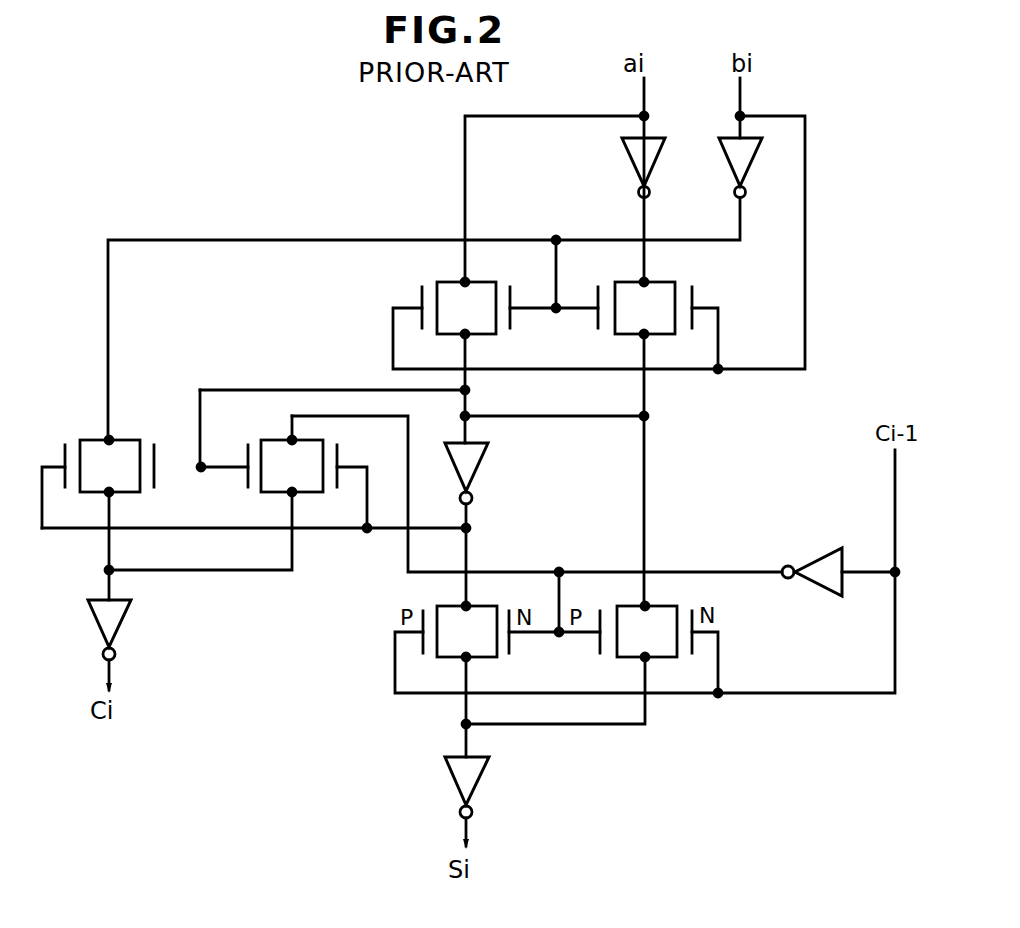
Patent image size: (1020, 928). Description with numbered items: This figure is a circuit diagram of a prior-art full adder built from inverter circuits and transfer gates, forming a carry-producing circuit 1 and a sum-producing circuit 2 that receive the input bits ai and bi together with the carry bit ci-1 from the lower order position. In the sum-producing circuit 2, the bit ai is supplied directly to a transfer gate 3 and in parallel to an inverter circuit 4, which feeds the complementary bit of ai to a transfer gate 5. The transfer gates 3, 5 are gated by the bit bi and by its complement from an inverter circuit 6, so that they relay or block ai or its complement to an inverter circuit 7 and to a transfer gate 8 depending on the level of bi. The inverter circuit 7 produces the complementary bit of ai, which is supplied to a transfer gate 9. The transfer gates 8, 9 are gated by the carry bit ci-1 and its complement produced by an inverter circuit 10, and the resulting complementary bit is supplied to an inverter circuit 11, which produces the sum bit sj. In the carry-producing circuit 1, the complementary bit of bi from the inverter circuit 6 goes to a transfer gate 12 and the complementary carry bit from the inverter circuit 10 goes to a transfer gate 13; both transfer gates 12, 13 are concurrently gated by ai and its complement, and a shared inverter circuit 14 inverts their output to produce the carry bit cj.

The carry-producing circuit 1 is at (206, 366).
The sum-producing circuit 2 is at (818, 180).
The transfer gate 3 is at (462, 280).
The inverter circuit 4 is at (632, 160).
The transfer gate 5 is at (652, 281).
The inverter circuit 6 is at (748, 158).
The inverter circuit 7 is at (480, 463).
The transfer gate 8 is at (658, 605).
The transfer gate 9 is at (460, 604).
The inverter circuit 10 is at (820, 556).
The inverter circuit 11 is at (480, 782).
The transfer gate 12 is at (119, 438).
The transfer gate 13 is at (287, 439).
The inverter circuit 14 is at (126, 614).